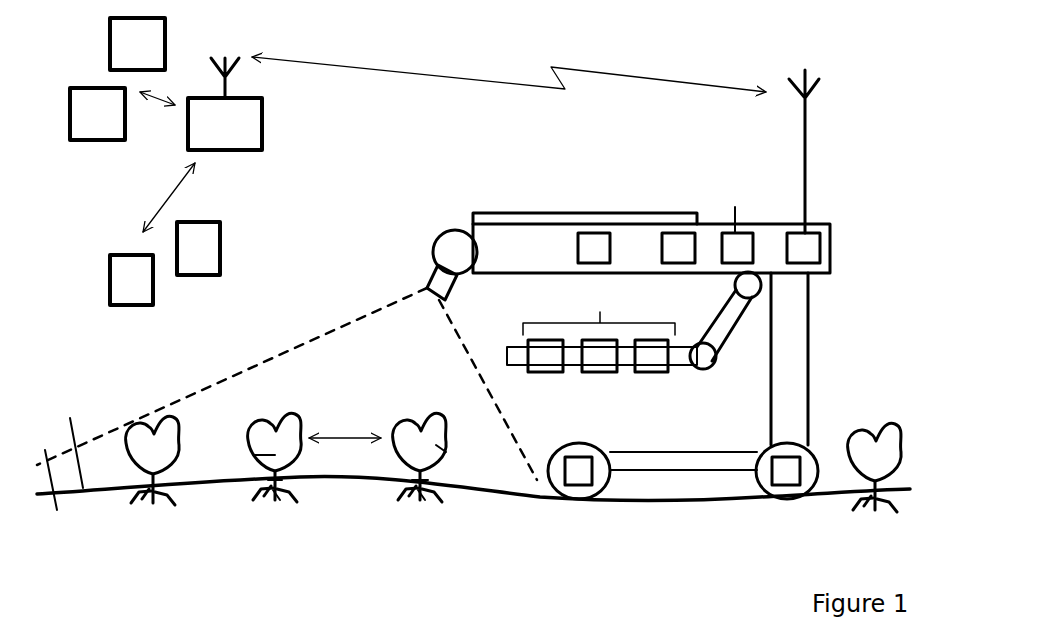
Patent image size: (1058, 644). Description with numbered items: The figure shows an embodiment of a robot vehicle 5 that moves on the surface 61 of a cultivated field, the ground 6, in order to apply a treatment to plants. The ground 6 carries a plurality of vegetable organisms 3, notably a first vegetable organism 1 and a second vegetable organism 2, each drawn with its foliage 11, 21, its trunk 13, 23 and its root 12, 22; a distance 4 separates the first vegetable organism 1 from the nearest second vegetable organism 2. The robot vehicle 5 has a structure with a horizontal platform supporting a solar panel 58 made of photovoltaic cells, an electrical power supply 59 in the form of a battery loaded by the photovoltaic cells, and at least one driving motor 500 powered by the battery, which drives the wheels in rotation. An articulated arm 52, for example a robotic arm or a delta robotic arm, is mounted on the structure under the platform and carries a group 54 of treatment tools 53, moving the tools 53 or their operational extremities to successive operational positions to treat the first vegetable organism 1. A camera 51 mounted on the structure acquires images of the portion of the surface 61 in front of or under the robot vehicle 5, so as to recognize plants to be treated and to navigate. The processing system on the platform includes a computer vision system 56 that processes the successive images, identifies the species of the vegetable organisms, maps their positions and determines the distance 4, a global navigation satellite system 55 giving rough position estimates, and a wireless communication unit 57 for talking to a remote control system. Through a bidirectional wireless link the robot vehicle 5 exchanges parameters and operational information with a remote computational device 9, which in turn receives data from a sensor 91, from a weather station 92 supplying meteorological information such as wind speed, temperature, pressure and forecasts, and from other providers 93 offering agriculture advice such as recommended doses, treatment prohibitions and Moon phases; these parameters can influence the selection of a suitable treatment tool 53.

The first vegetable organism 1 is at (417, 427).
The second vegetable organism 2 is at (260, 428).
The vegetable organism 3 is at (146, 436).
The distance between the first and second vegetable organisms 4 is at (345, 424).
The robot vehicle 5 is at (862, 205).
The ground 6 is at (471, 467).
The surface of the ground 61 is at (67, 438).
The remote computational device 9 is at (237, 136).
The sensor 91 is at (127, 278).
The weather station 92 is at (142, 57).
The other providers 93 is at (95, 102).
The foliage of the first vegetable organism 11 is at (440, 448).
The root of the first vegetable organism 12 is at (430, 485).
The trunk of the first vegetable organism 13 is at (408, 480).
The foliage of the second vegetable organism 21 is at (262, 455).
The root of the second vegetable organism 22 is at (277, 503).
The trunk of the second vegetable organism 23 is at (258, 482).
The camera 51 is at (443, 255).
The articulated arm 52 is at (682, 358).
The treatment tool 53 is at (548, 362).
The group of treatment tools 54 is at (599, 312).
The global navigation satellite system 55 is at (735, 247).
The computer vision system 56 is at (677, 245).
The wireless communication unit 57 is at (797, 245).
The solar panel 58 is at (492, 220).
The electrical power supply 59 is at (593, 246).
The driving motor 500 is at (579, 478).